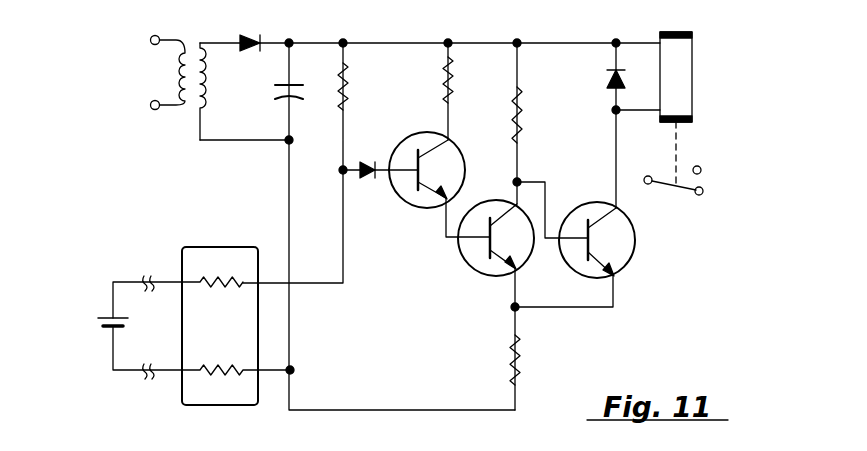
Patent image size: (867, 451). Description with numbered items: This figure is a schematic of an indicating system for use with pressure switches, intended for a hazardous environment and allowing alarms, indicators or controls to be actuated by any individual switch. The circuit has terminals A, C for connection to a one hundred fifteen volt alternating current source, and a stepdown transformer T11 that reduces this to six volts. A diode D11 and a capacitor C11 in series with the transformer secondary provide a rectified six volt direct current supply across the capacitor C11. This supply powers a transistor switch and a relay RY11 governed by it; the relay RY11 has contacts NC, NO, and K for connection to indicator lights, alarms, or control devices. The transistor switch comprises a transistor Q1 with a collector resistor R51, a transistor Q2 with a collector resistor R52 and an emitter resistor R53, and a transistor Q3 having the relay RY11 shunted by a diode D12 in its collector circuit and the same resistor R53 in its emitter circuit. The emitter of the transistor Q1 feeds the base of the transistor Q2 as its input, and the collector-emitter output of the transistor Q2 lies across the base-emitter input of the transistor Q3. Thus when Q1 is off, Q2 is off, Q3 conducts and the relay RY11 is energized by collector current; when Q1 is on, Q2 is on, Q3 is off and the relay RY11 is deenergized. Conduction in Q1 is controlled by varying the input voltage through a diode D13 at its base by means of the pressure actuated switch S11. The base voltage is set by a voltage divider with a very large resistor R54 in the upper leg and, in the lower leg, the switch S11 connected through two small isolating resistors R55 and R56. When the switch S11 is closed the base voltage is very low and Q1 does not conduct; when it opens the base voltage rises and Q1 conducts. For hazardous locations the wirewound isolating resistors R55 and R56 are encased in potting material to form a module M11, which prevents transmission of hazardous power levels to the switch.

The stepdown transformer T11 is at (192, 108).
The diode D11 is at (249, 54).
The capacitor C11 is at (282, 97).
The resistor R54 is at (352, 90).
The collector resistor R51 is at (455, 70).
The collector resistor R52 is at (521, 100).
The diode D12 is at (609, 89).
The relay RY11 is at (693, 69).
The contact K is at (666, 173).
The contact NC is at (712, 171).
The contact NO is at (714, 197).
The diode D13 is at (365, 179).
The transistor Q1 is at (413, 210).
The transistor Q2 is at (466, 264).
The transistor Q3 is at (636, 259).
The emitter resistor R53 is at (524, 360).
The module M11 is at (232, 237).
The isolating resistor R55 is at (212, 300).
The isolating resistor R56 is at (240, 362).
The pressure actuated switch S11 is at (100, 324).
The terminal A is at (150, 40).
The terminal C is at (150, 105).